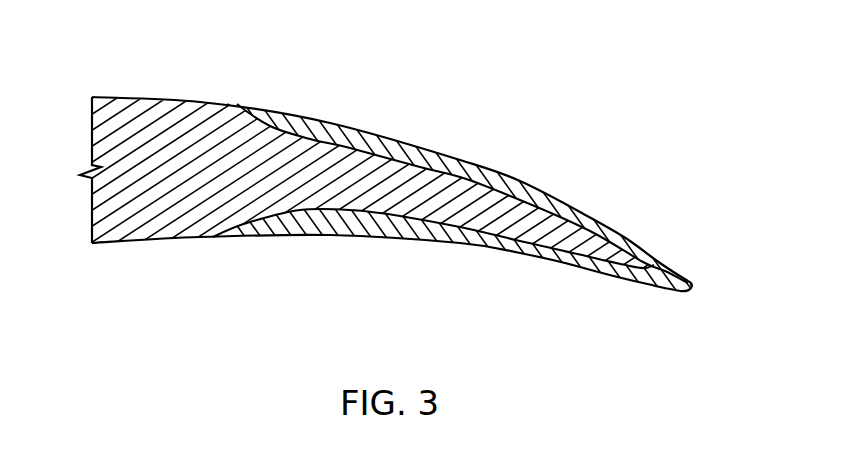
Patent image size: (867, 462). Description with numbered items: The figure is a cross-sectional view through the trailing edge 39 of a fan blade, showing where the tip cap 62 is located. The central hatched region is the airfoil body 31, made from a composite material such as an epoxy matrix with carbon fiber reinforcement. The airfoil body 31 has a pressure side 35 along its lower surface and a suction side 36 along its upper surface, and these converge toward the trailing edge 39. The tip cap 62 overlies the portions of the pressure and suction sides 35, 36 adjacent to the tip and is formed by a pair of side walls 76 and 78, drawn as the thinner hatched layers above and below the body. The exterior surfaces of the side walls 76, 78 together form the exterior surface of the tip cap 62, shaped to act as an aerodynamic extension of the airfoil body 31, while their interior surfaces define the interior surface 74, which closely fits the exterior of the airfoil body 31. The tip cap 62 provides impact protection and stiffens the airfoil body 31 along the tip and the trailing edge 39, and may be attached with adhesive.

The airfoil body 31 is at (179, 185).
The pressure side 35 is at (176, 243).
The suction side 36 is at (172, 97).
The trailing edge 39 is at (692, 287).
The tip cap 62 is at (398, 221).
The interior surface 74 is at (430, 171).
The side wall 76 is at (499, 176).
The side wall 78 is at (412, 233).